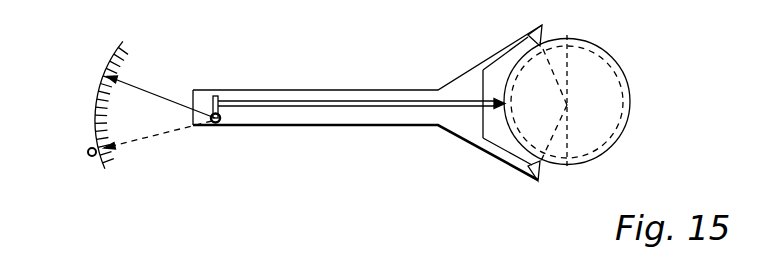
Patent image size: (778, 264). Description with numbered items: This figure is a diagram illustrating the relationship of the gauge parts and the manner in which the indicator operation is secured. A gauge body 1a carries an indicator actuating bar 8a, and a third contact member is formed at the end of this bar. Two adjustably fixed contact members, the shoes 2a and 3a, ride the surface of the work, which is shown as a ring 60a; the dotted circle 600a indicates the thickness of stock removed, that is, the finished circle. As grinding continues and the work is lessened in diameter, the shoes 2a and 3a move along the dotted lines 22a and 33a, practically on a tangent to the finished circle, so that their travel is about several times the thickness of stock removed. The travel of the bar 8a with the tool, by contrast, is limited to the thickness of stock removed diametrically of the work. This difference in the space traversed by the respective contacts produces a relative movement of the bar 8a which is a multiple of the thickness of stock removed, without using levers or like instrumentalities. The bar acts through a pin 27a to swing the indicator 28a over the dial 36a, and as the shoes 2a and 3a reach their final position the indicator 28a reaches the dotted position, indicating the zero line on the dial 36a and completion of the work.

The bar body 1a is at (301, 126).
The shoe 2a is at (541, 41).
The shoe 3a is at (540, 180).
The rod 8a is at (420, 100).
The dotted line 22a is at (560, 33).
The pivot pin 27a is at (216, 96).
The indicator 28a is at (163, 97).
The dotted line 33a is at (568, 167).
The dial 36a is at (96, 99).
The ring 60a is at (629, 79).
The dotted circle 600a is at (622, 108).